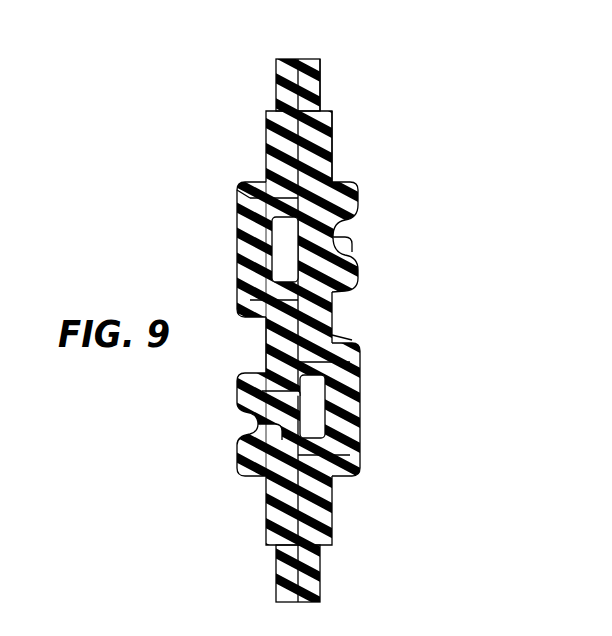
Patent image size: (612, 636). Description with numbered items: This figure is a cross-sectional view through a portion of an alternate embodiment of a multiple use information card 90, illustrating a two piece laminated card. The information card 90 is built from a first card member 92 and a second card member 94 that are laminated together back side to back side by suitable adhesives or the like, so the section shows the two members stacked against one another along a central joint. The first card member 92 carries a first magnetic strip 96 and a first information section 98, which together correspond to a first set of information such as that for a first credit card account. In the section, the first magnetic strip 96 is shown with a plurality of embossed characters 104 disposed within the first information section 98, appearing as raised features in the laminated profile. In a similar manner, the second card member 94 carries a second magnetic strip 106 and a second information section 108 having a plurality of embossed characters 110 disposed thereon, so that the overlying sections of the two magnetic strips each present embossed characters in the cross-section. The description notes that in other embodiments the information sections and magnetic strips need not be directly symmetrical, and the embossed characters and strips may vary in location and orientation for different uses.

The information card 90 is at (426, 125).
The first card member 92 is at (285, 60).
The second card member 94 is at (310, 60).
The first magnetic strip 96 is at (268, 155).
The second magnetic strip 106 is at (333, 138).
The embossed characters 104 is at (235, 251).
The embossed characters 110 is at (360, 265).
The second information section 108 is at (381, 173).
The first information section 98 is at (218, 173).